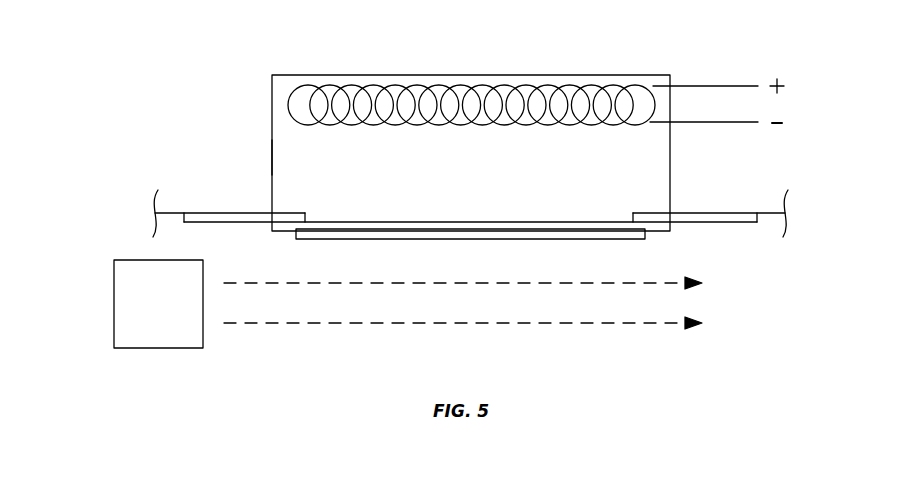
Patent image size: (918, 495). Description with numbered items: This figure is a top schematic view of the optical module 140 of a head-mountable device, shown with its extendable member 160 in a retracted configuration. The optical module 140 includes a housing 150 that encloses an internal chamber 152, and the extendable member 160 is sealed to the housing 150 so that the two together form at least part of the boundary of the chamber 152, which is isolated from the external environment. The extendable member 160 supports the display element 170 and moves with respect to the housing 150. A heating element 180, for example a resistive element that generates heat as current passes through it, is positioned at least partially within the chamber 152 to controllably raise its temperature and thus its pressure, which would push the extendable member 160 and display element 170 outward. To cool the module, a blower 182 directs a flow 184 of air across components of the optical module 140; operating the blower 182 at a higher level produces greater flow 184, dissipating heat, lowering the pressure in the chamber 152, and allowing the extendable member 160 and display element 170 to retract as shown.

The optical module 140 is at (205, 39).
The housing 150 is at (332, 75).
The internal chamber 152 is at (296, 163).
The extendable member 160 is at (228, 222).
The display element 170 is at (347, 240).
The heating element 180 is at (480, 75).
The blower 182 is at (114, 302).
The flow 184 is at (443, 285).